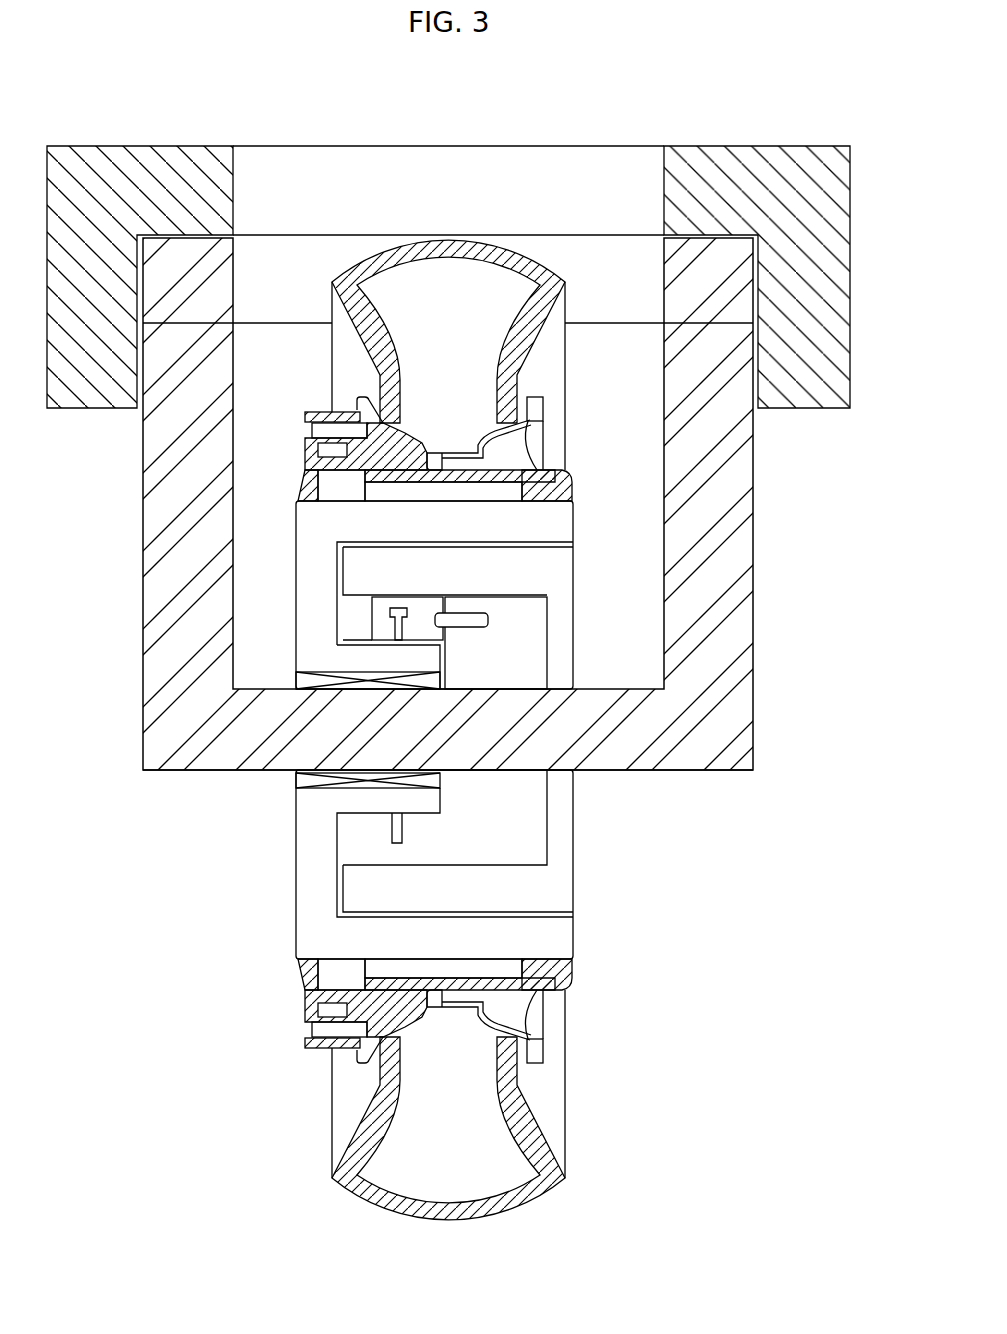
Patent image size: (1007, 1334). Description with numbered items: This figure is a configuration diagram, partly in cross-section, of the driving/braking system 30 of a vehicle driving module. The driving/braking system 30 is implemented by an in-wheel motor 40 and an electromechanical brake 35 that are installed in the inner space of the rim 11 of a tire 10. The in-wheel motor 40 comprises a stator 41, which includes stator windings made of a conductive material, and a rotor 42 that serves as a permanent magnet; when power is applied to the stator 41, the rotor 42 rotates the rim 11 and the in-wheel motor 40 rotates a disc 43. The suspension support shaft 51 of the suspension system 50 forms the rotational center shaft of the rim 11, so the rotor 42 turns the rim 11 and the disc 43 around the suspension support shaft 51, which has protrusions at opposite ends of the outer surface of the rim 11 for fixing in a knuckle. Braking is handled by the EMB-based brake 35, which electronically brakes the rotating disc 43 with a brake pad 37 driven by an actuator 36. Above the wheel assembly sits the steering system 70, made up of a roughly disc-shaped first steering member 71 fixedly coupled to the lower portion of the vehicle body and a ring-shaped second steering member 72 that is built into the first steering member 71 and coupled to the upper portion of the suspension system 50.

The tire 10 is at (550, 1090).
The rim 11 is at (306, 1001).
The driving/braking system 30 is at (519, 830).
The electromechanical brake (EMB) 35 is at (538, 660).
The actuator 36 is at (488, 620).
The brake pad 37 is at (385, 618).
The in-wheel motor 40 is at (285, 888).
The stator 41 is at (550, 890).
The rotor 42 is at (555, 518).
The disc 43 is at (355, 803).
The suspension system 50 is at (158, 667).
The suspension support shaft 51 is at (285, 745).
The steering system 70 is at (666, 146).
The first steering member 71 is at (160, 170).
The second steering member 72 is at (222, 283).